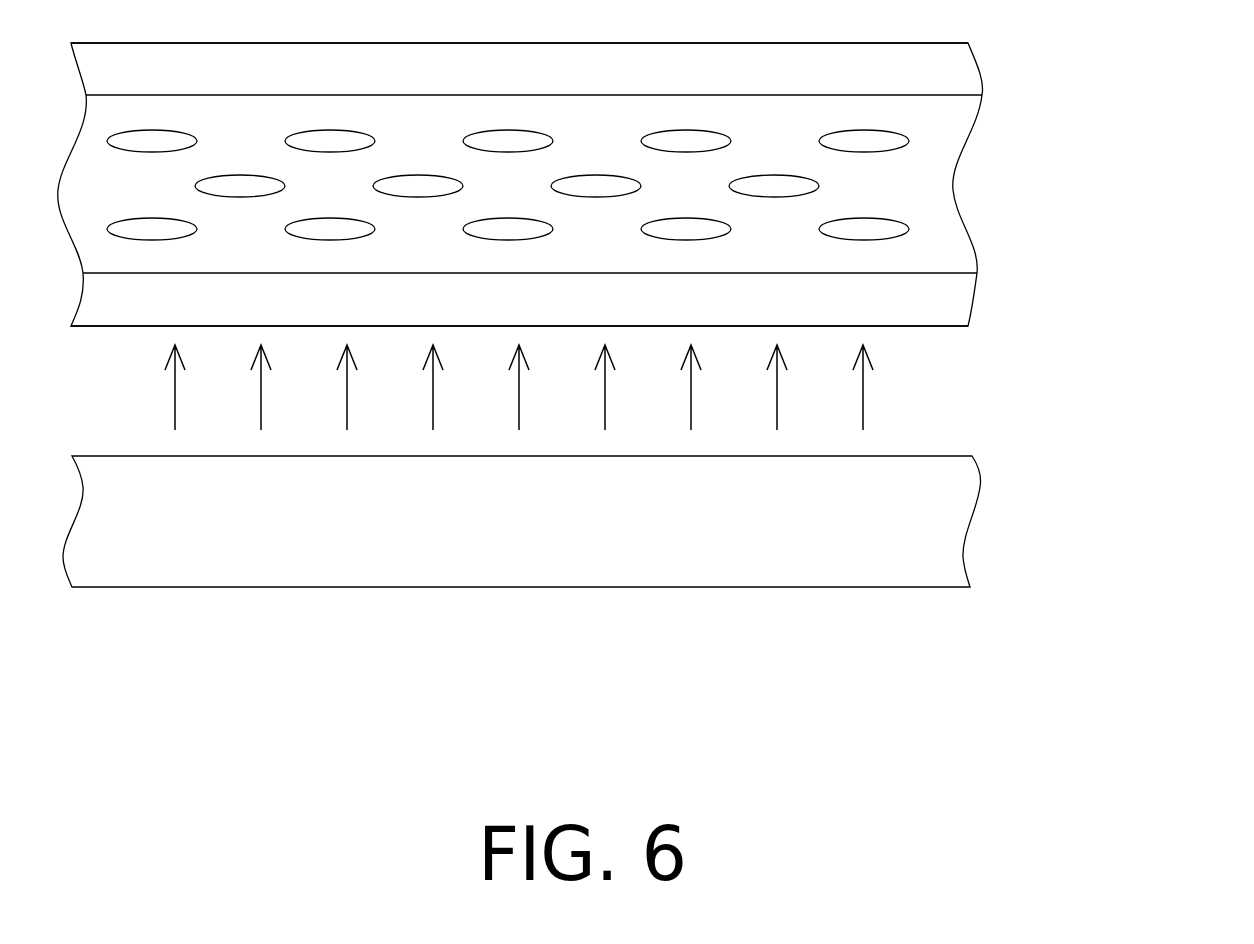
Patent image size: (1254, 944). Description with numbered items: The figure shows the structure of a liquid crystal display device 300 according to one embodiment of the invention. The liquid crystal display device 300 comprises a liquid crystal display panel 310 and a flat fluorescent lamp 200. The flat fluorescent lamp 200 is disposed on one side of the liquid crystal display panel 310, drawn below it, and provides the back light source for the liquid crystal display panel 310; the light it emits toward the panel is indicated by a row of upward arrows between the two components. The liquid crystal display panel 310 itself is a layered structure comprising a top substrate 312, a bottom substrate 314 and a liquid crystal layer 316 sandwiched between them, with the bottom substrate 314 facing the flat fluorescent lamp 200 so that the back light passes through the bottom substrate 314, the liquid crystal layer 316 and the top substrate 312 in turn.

The liquid crystal display panel 310 is at (1124, 47).
The top substrate 312 is at (975, 73).
The bottom substrate 314 is at (960, 305).
The liquid crystal layer 316 is at (940, 190).
The flat fluorescent lamp 200 is at (966, 495).
The liquid crystal display device 300 is at (573, 683).